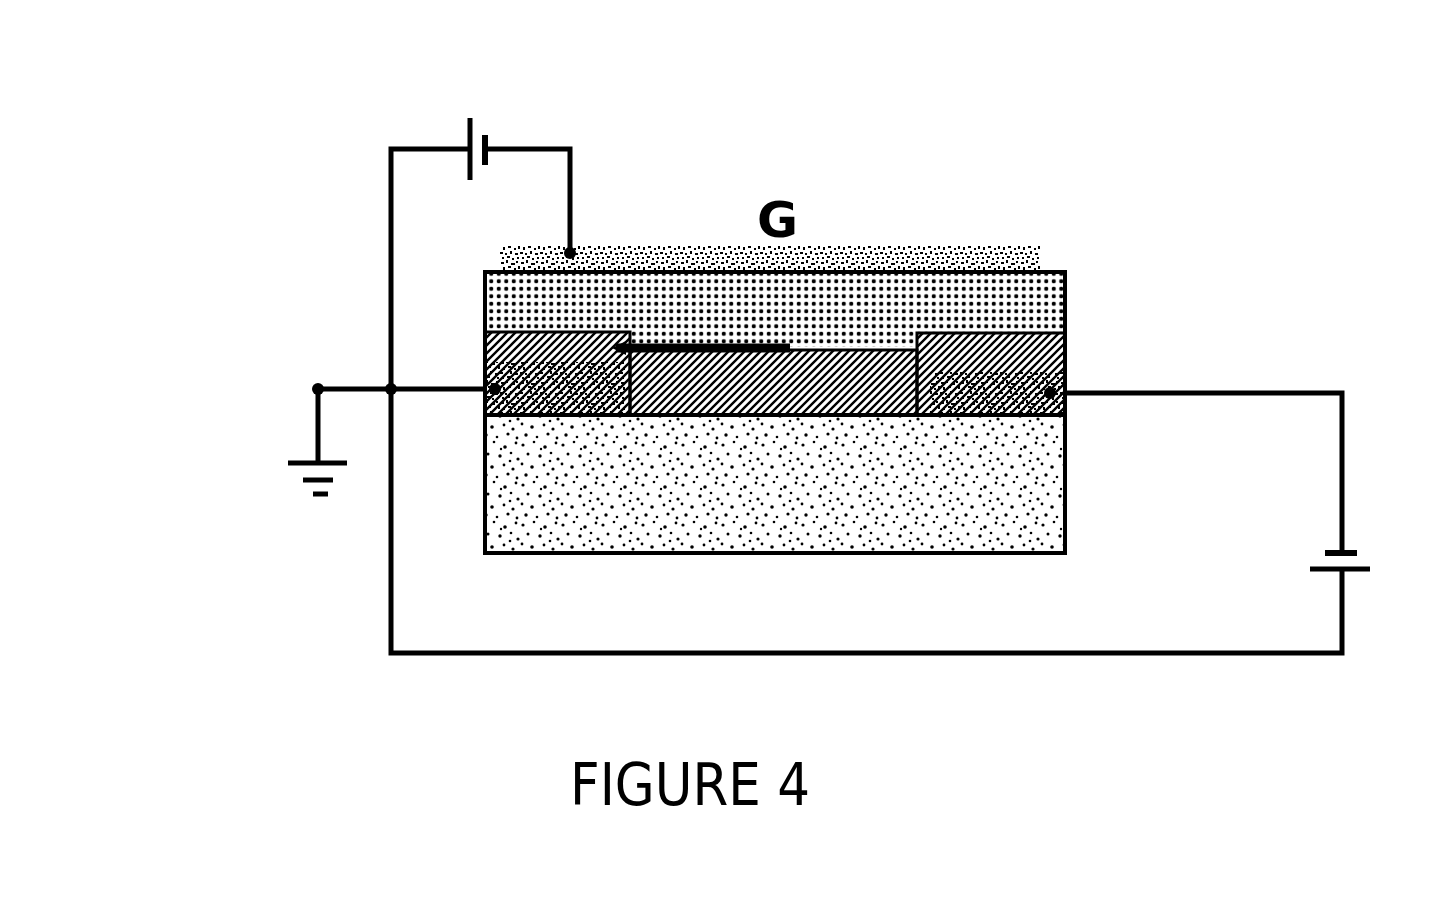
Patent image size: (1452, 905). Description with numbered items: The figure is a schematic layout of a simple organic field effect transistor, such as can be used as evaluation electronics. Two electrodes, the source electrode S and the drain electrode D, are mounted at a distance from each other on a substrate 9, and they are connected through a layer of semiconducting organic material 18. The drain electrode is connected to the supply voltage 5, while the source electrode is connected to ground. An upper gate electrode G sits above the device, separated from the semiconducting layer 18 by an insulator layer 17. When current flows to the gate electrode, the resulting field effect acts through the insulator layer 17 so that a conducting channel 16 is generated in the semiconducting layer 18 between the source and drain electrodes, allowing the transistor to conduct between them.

The supply voltage 5 is at (1372, 561).
The substrate 9 is at (775, 484).
The conducting channel 16 is at (790, 345).
The insulator layer 17 is at (552, 292).
The semiconducting organic material 18 is at (730, 386).